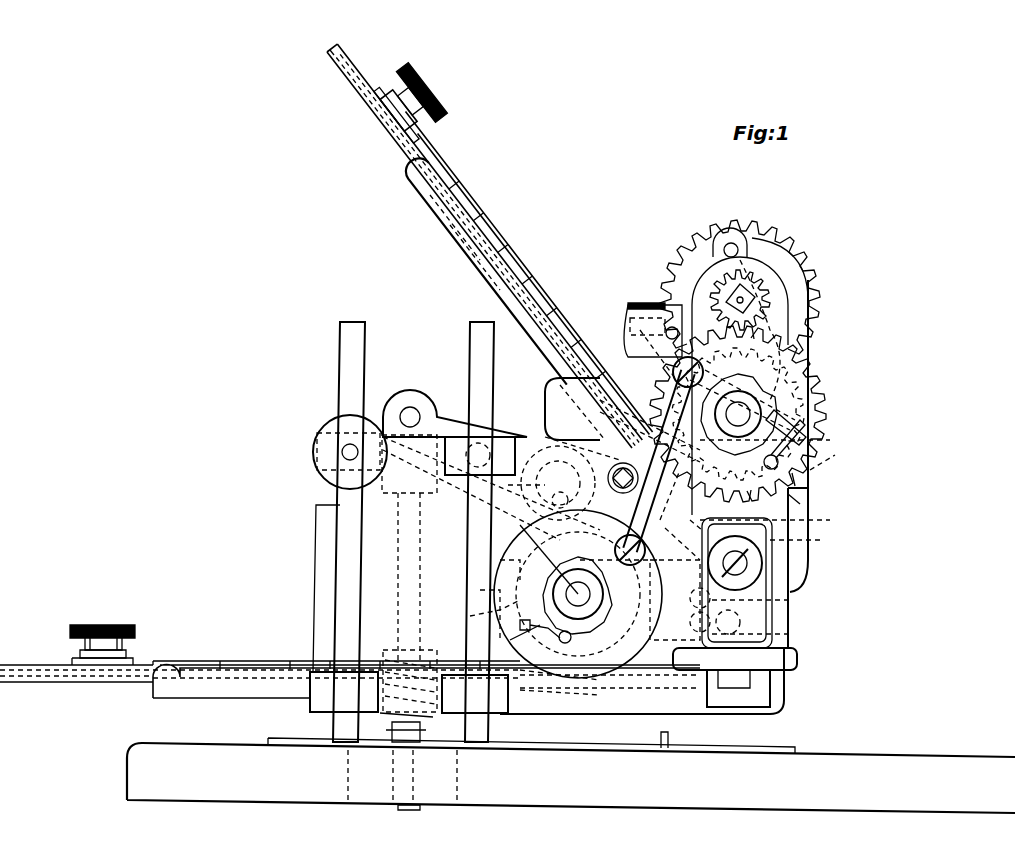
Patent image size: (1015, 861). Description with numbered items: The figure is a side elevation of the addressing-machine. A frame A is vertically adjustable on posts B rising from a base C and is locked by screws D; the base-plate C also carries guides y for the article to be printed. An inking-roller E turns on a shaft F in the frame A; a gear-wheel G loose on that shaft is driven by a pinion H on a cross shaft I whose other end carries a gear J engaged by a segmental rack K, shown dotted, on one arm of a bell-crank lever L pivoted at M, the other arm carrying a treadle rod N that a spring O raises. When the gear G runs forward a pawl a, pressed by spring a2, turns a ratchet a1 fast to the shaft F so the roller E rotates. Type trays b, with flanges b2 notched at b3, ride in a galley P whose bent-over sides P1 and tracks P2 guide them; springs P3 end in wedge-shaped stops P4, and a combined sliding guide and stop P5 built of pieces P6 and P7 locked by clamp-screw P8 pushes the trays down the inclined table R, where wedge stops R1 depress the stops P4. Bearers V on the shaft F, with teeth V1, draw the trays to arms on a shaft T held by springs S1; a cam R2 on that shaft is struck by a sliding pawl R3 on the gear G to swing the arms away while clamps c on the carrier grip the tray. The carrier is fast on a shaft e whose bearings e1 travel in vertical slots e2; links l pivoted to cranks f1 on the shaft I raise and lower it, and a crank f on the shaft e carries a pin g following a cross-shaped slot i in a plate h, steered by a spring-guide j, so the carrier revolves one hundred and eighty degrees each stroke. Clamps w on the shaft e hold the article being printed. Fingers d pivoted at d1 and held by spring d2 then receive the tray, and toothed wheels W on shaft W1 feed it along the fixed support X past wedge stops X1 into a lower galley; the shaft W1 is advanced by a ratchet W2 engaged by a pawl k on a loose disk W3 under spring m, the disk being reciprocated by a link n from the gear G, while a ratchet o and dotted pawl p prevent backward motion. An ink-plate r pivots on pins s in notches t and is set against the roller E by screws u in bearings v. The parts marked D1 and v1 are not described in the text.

The base C is at (958, 763).
The spring O is at (380, 718).
The guides y is at (660, 736).
The posts B is at (470, 331).
The frame A is at (315, 528).
The links l is at (800, 262).
The gear J is at (748, 240).
The crank f1 is at (760, 262).
The pinion H is at (755, 293).
The shaft I is at (748, 303).
The teeth V1 is at (800, 340).
The gear-wheel G is at (830, 405).
The segmental rack K is at (740, 392).
The shaft F is at (779, 412).
The inking-roller E is at (776, 457).
The circular bearers V is at (822, 430).
The spring a2 is at (823, 470).
The pawl a is at (798, 480).
The ratchet a1 is at (803, 498).
The eccentric or crank f is at (808, 542).
The shaft e is at (792, 582).
The slot i is at (812, 588).
The spring-guide j is at (790, 610).
The bearings e1 is at (698, 590).
The pin g is at (700, 614).
The clamps w is at (799, 662).
The plate h is at (707, 678).
The vertical slots e2 is at (736, 690).
The screws u is at (648, 305).
The notches t is at (674, 326).
The plate r is at (630, 326).
The bearings v is at (640, 350).
The wedge-shaped stops R1 is at (672, 378).
The link v1 is at (690, 420).
The springs S1 is at (545, 398).
The springs P3 is at (560, 380).
The wedge-shaped stops P4 is at (580, 445).
The bell-crank lever L is at (452, 412).
The screws D is at (315, 455).
The cam lever D1 is at (480, 482).
The pivot M is at (520, 488).
The rod N is at (395, 544).
The sliding pawl R3 is at (572, 470).
The shaft T is at (614, 484).
The cam R2 is at (605, 480).
The link n is at (665, 501).
The pins s is at (682, 536).
The clamps c is at (691, 516).
The toothed wheels W is at (500, 535).
The shaft W1 is at (530, 545).
The ratchet W2 is at (520, 580).
The disk W3 is at (495, 595).
The ratchet o is at (470, 616).
The pawl p is at (576, 580).
The spring m is at (520, 626).
The pawl k is at (516, 642).
The fingers d is at (655, 596).
The pivot d1 is at (605, 678).
The spring d2 is at (590, 694).
The fixed support X is at (212, 700).
The wedge-shaped stops X1 is at (610, 711).
The galley P is at (338, 66).
The sides P1 is at (336, 54).
The tracks P2 is at (360, 82).
The under piece P6 is at (372, 112).
The combined sliding guide and stop P5 is at (415, 134).
The upper piece P7 is at (382, 102).
The clamp-screw P8 is at (430, 76).
The tray b is at (462, 206).
The notches b3 is at (432, 196).
The flanges b2 is at (452, 224).
The inclined table R is at (484, 270).